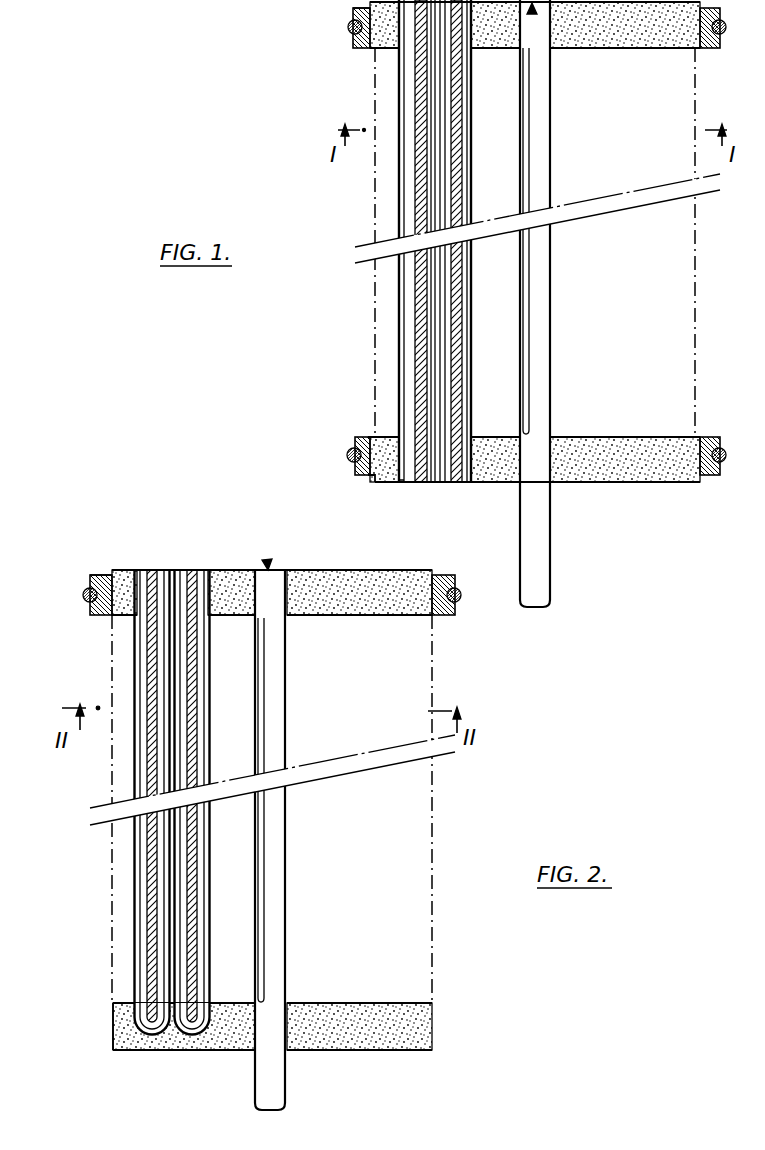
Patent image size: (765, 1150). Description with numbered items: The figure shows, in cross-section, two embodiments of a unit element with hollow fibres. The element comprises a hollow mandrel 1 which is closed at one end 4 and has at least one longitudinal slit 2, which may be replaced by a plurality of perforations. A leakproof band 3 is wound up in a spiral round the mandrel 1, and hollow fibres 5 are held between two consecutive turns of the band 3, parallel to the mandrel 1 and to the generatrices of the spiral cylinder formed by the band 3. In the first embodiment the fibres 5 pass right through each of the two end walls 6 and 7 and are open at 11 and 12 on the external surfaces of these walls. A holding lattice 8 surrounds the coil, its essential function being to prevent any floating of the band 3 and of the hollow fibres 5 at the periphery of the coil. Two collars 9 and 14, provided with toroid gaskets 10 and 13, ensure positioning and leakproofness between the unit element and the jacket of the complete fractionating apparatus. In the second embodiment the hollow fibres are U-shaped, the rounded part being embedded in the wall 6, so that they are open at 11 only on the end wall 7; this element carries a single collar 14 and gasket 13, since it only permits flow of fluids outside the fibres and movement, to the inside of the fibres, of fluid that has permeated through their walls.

In FIG. 1, the hollow mandrel 1 is at (532, 514).
In FIG. 2, the hollow mandrel 1 is at (272, 1076).
In FIG. 1, the longitudinal slit 2 is at (526, 430).
In FIG. 2, the longitudinal slit 2 is at (262, 1002).
In FIG. 1, the leakproof band 3 is at (420, 60).
In FIG. 2, the leakproof band 3 is at (152, 596).
In FIG. 1, the closed end 4 is at (534, 14).
In FIG. 2, the closed end 4 is at (266, 563).
In FIG. 1, the hollow fibres 5 is at (400, 315).
In FIG. 2, the hollow fibres 5 is at (136, 874).
In FIG. 1, the end wall 6 is at (470, 483).
In FIG. 2, the end wall 6 is at (177, 1040).
In FIG. 1, the end wall 7 is at (626, 25).
In FIG. 2, the end wall 7 is at (320, 592).
In FIG. 1, the holding lattice 8 is at (366, 360).
In FIG. 2, the holding lattice 8 is at (104, 928).
In FIG. 1, the collar 9 is at (358, 440).
In FIG. 1, the toroid gasket 10 is at (342, 455).
In FIG. 1, the fibre opening 11 is at (356, 9).
In FIG. 2, the fibre opening 11 is at (137, 566).
In FIG. 1, the fibre opening 12 is at (400, 494).
In FIG. 1, the toroid gasket 13 is at (344, 27).
In FIG. 2, the toroid gasket 13 is at (76, 592).
In FIG. 1, the collar 14 is at (352, 46).
In FIG. 2, the collar 14 is at (90, 614).